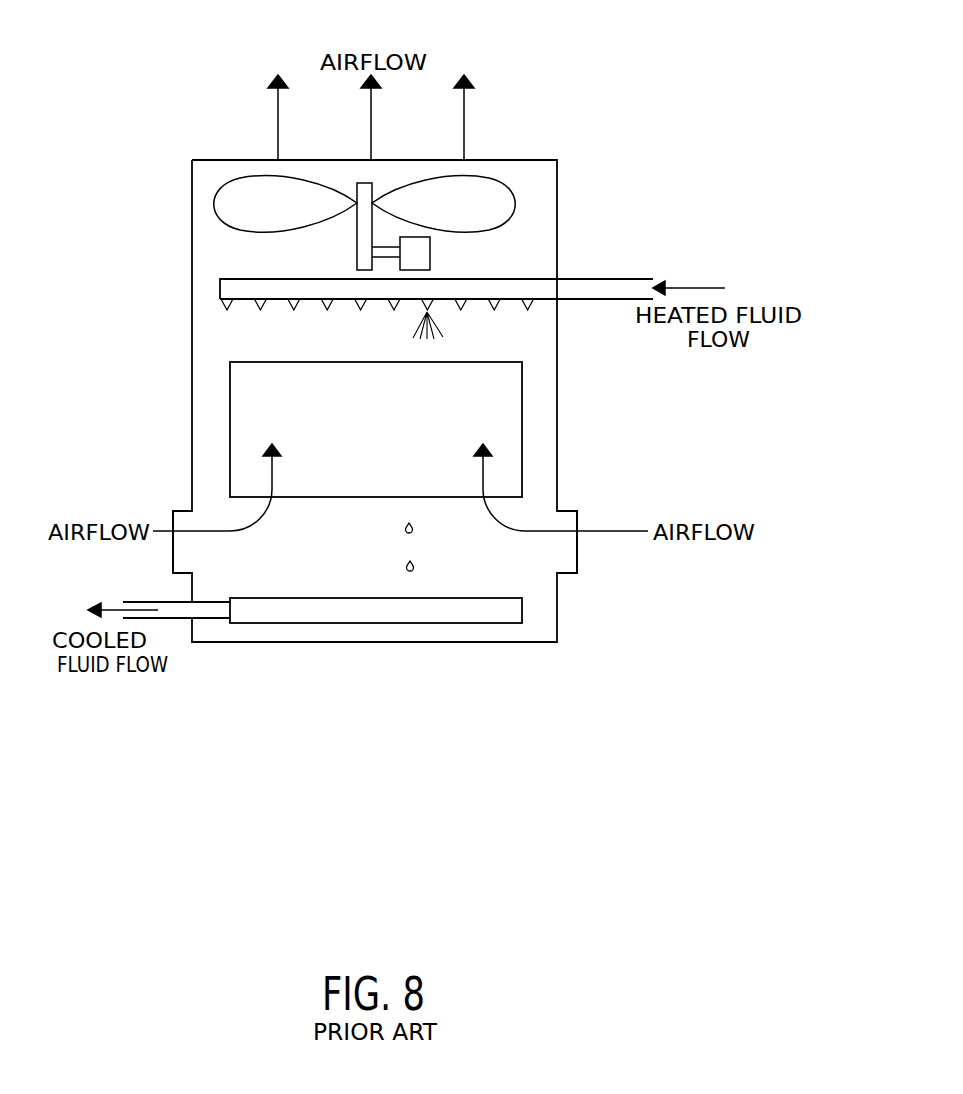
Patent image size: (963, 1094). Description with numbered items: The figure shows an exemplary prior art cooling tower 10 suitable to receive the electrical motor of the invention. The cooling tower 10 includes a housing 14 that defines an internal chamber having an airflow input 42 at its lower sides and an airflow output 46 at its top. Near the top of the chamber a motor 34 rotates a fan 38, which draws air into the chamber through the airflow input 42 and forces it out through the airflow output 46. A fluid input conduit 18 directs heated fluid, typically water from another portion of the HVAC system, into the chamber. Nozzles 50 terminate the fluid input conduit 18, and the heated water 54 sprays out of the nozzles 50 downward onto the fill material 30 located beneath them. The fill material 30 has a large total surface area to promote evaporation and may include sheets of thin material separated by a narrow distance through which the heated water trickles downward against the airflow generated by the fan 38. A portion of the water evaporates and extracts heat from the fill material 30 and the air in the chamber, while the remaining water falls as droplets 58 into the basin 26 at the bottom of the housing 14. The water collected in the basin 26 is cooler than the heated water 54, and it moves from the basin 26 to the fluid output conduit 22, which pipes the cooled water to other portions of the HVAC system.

The cooling tower 10 is at (573, 88).
The housing 14 is at (192, 235).
The airflow output 46 is at (215, 159).
The fan 38 is at (270, 230).
The motor 34 is at (430, 247).
The fluid input conduit 18 is at (575, 278).
The nozzles 50 is at (260, 312).
The heated water 54 is at (440, 325).
The fill material 30 is at (328, 497).
The airflow input 42 is at (173, 514).
The fluid droplets 58 is at (414, 527).
The basin 26 is at (467, 597).
The fluid output conduit 22 is at (178, 618).